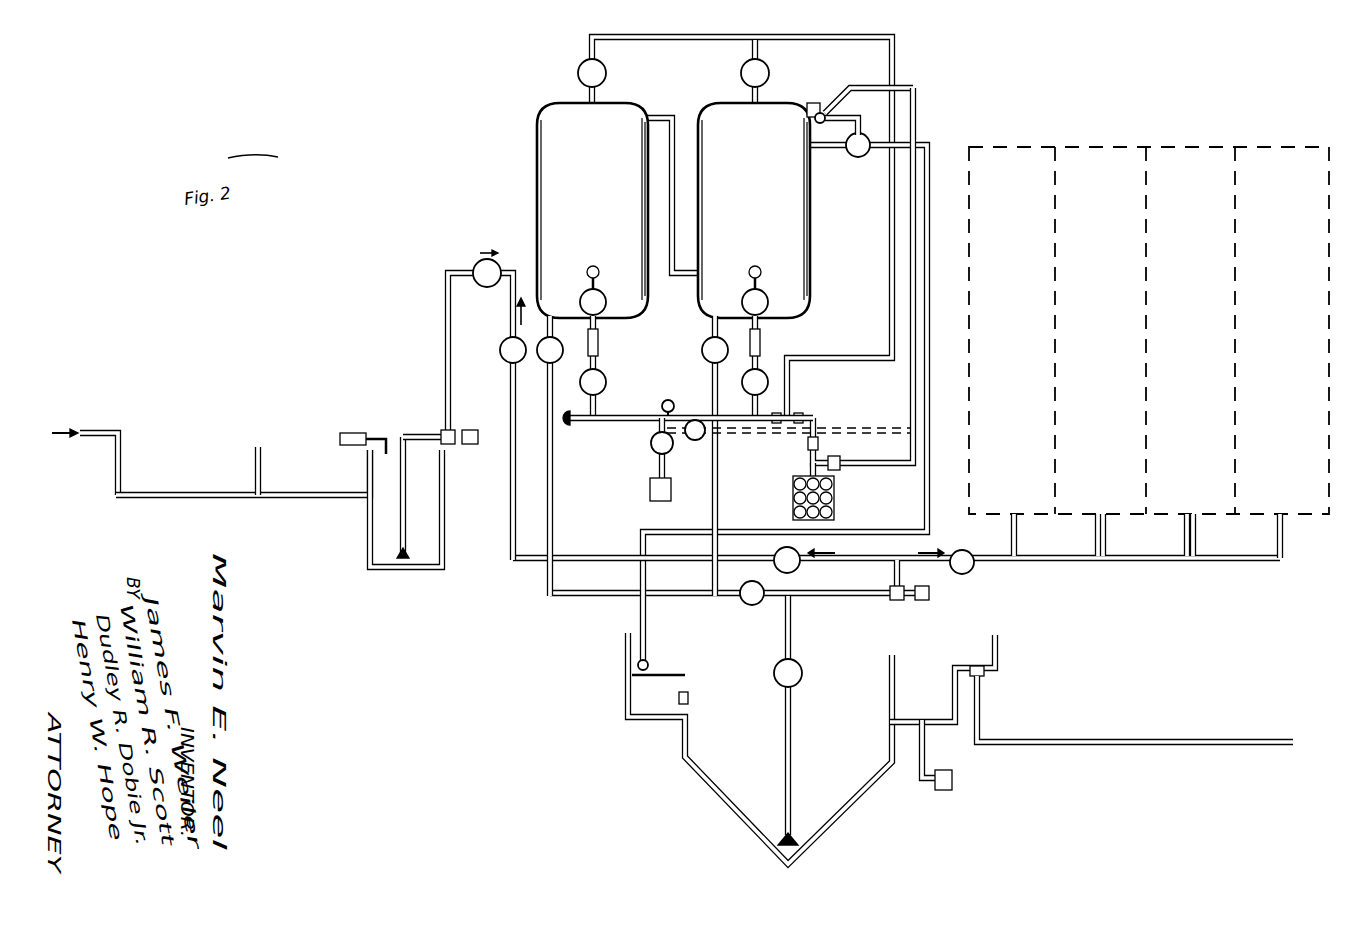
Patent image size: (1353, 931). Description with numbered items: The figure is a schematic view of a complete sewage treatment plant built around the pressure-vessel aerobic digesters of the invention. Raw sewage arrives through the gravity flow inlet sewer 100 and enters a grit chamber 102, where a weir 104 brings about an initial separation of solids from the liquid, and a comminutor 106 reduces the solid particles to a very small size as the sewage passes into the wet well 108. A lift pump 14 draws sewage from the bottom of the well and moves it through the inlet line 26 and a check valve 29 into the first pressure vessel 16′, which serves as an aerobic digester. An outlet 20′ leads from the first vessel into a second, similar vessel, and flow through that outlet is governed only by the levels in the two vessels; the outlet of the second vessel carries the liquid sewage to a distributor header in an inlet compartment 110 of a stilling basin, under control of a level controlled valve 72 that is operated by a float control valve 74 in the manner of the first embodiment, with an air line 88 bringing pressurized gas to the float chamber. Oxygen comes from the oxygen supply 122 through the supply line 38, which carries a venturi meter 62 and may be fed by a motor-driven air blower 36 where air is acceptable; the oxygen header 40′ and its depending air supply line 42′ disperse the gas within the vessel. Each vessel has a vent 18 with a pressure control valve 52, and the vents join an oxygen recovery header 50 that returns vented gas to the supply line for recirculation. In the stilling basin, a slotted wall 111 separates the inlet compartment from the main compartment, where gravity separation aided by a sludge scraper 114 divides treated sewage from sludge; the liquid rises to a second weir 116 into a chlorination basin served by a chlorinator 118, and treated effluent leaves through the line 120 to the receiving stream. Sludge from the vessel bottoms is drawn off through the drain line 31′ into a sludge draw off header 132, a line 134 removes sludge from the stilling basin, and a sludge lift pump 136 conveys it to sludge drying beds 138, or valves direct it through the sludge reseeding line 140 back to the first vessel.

The lift pump 14 is at (468, 452).
The first pressure vessel 16′ is at (592, 210).
The vent 18 is at (600, 97).
The outlet 20′ is at (653, 115).
The inlet line 26 is at (446, 290).
The check valve 29 is at (475, 262).
The drain line 31′ is at (553, 468).
The motor-driven air blower 36 is at (650, 490).
The oxygen supply line 38 is at (740, 422).
The oxygen header 40′ is at (593, 420).
The air supply line 42′ is at (604, 337).
The oxygen recovery header 50 is at (788, 35).
The pressure control valve 52 is at (576, 70).
The venturi meter 62 is at (800, 410).
The level controlled valve 72 is at (858, 160).
The float control valve 74 is at (820, 100).
The air line 88 is at (912, 402).
The gravity flow inlet sewer 100 is at (100, 430).
The grit chamber 102 is at (177, 470).
The weir 104 is at (262, 455).
The comminutor 106 is at (352, 430).
The wet well 108 is at (366, 515).
The inlet compartment 110 is at (628, 700).
The slotted wall 111 is at (690, 697).
The sludge scraper 114 is at (735, 790).
The second weir 116 is at (888, 656).
The chlorinator 118 is at (952, 780).
The effluent line 120 is at (1140, 740).
The oxygen supply 122 is at (836, 498).
The sludge draw off header 132 is at (565, 600).
The sludge line 134 is at (792, 715).
The sludge lift pump 136 is at (930, 596).
The sludge drying beds 138 is at (1160, 322).
The sludge reseeding line 140 is at (518, 565).